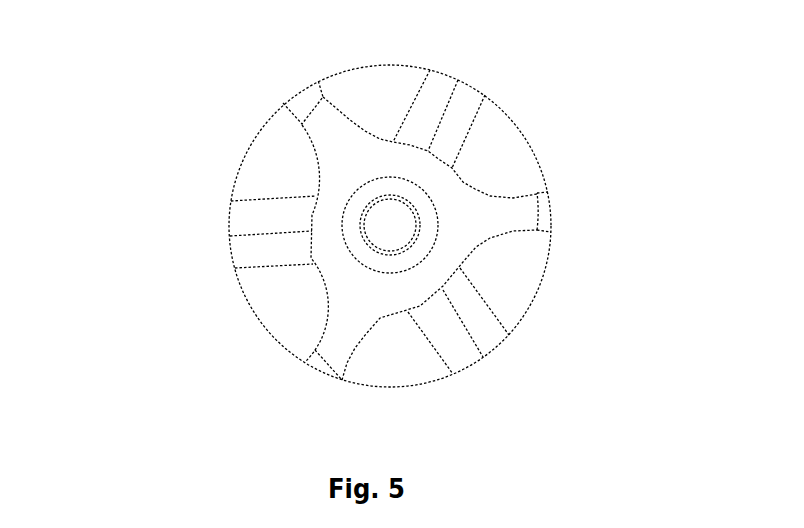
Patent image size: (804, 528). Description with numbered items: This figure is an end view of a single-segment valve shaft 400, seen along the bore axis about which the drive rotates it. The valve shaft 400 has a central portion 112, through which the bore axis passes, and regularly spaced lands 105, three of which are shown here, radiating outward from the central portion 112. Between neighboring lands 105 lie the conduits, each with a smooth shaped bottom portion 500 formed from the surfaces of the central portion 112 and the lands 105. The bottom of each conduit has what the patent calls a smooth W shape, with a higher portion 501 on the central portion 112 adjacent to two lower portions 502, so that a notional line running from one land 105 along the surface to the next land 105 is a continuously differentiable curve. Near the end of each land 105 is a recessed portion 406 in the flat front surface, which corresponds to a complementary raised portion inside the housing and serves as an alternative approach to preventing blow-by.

The valve shaft 400 is at (170, 122).
The central portion 112 is at (450, 195).
The land 105 is at (522, 215).
The smooth shaped bottom portion 500 is at (302, 125).
The higher portion 501 is at (445, 285).
The lower portion 502 is at (490, 245).
The recessed portion 406 is at (320, 360).